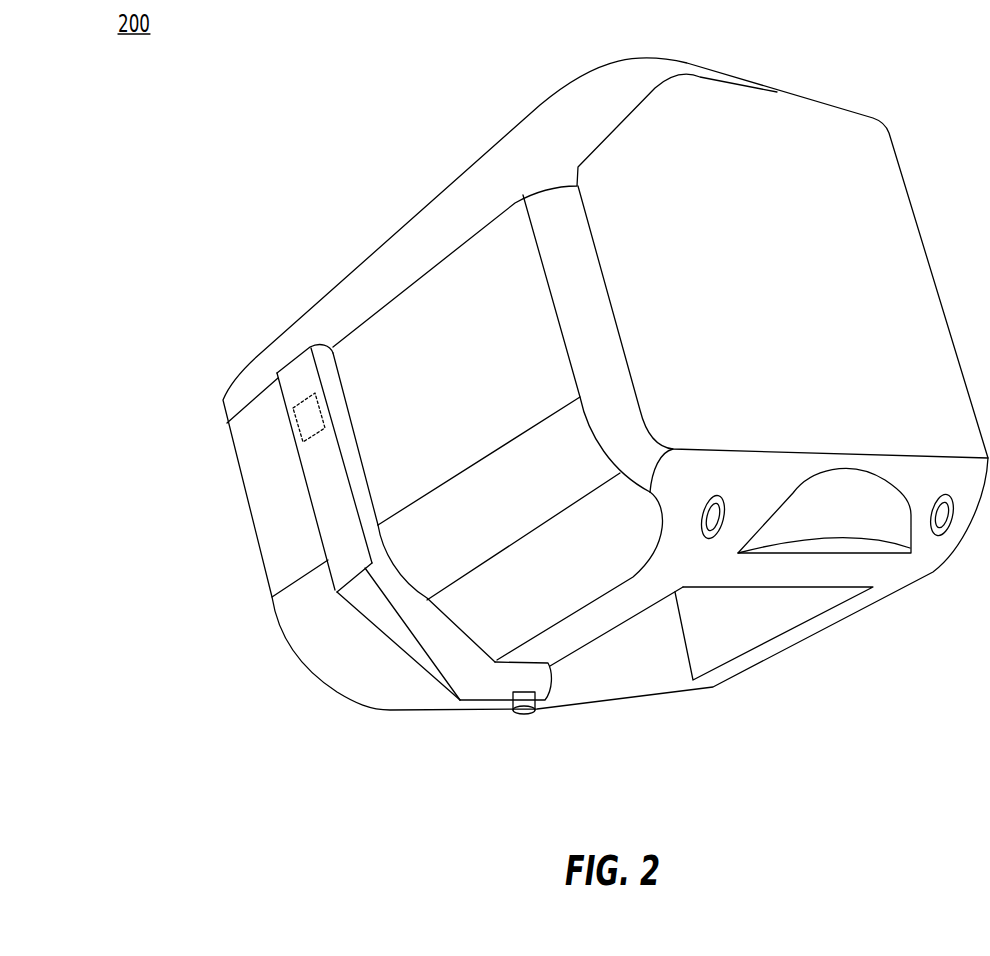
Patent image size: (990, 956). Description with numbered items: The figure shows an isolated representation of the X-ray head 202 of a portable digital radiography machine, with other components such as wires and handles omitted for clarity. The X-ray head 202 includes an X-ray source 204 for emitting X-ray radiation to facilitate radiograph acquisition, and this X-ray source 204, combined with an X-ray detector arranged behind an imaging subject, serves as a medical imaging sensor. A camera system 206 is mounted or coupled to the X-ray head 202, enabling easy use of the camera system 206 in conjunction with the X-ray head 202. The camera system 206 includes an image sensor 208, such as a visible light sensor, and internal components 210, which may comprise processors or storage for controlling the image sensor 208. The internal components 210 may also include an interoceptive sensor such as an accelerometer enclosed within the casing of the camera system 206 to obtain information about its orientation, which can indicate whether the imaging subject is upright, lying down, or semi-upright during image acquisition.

The X-ray head 202 is at (838, 87).
The X-ray source 204 is at (755, 633).
The camera system 206 is at (422, 660).
The image sensor 208 is at (513, 712).
The internal components 210 is at (295, 427).